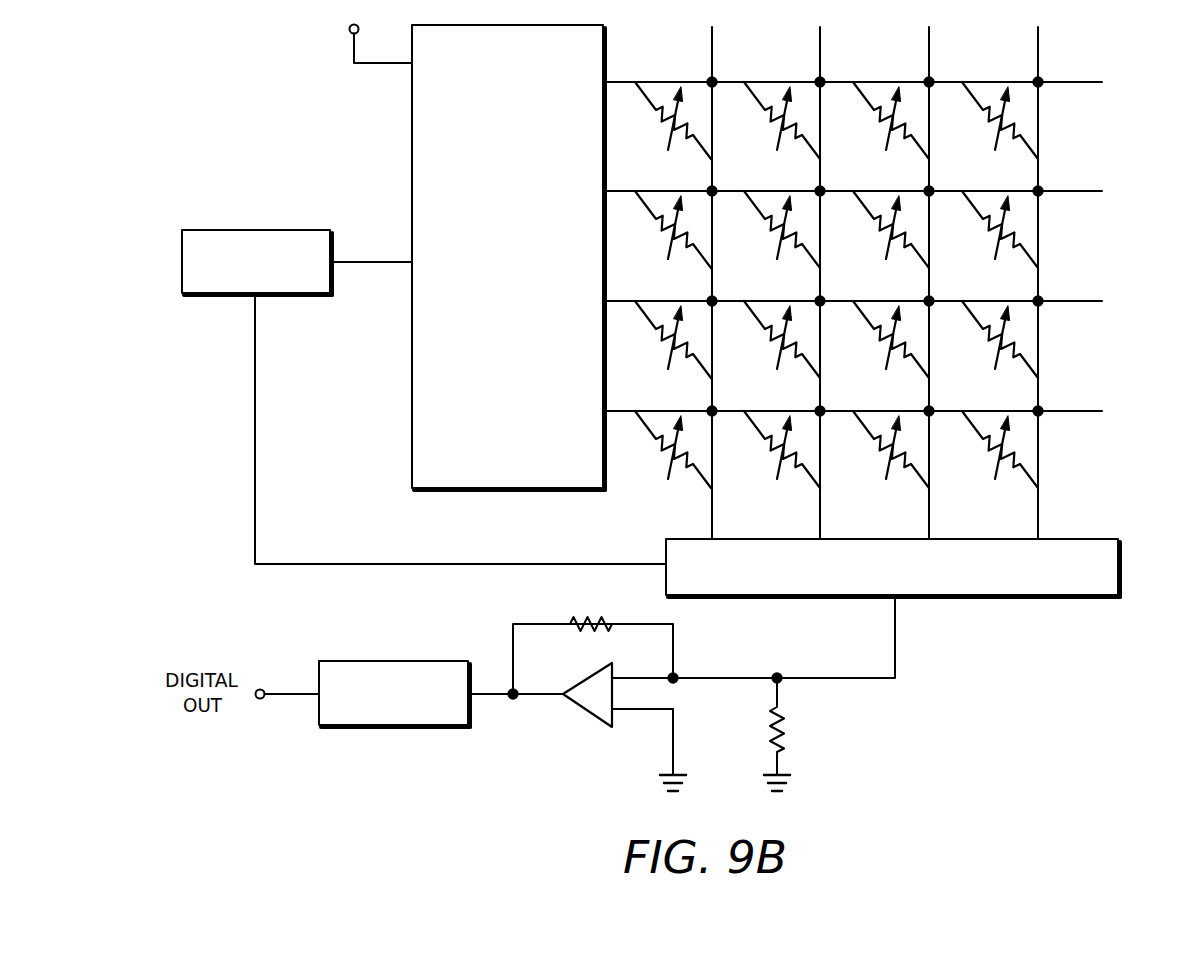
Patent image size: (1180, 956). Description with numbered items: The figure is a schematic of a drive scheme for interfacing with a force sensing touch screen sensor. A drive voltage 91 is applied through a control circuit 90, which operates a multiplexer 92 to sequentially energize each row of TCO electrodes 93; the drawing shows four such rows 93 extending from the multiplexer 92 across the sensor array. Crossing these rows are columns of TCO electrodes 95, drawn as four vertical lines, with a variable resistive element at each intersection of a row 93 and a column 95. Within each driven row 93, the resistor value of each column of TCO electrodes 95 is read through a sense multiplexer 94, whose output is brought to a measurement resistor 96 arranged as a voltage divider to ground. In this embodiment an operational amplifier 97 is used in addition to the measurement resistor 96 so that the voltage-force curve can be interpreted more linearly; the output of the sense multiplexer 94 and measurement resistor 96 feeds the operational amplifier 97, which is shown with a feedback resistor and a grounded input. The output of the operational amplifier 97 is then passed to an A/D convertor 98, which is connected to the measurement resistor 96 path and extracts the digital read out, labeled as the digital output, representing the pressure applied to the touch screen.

The control circuit 90 is at (312, 230).
The drive voltage 91 is at (354, 47).
The multiplexer 92 is at (412, 380).
The row of TCO electrodes 93 is at (1068, 84).
The sense multiplexer 94 is at (1103, 540).
The column of TCO electrodes 95 is at (712, 50).
The measurement resistor 96 is at (771, 733).
The operational amplifier 97 is at (590, 712).
The A/D convertor 98 is at (455, 661).